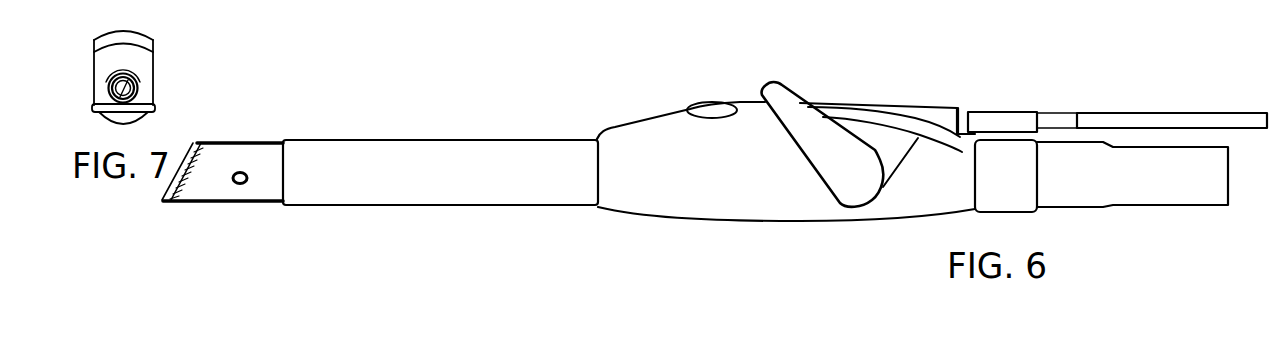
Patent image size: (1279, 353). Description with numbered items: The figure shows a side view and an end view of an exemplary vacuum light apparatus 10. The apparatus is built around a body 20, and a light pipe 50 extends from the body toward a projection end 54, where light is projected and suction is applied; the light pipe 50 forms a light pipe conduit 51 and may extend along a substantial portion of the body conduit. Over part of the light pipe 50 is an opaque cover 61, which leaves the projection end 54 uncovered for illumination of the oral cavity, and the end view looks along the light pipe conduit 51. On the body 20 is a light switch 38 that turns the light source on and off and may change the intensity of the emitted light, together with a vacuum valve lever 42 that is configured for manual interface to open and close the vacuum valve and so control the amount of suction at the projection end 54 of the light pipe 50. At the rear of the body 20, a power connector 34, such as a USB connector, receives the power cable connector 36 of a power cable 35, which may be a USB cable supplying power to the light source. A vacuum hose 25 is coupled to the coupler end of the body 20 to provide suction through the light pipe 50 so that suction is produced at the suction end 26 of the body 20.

In FIG. 6, the vacuum light apparatus 10 is at (776, 149).
In FIG. 6, the body 20 is at (878, 143).
In FIG. 6, the vacuum hose 25 is at (1075, 173).
In FIG. 6, the suction end 26 is at (601, 202).
In FIG. 6, the power connector 34 is at (972, 120).
In FIG. 6, the power cable 35 is at (1135, 132).
In FIG. 6, the power cable connector 36 is at (1000, 130).
In FIG. 6, the light switch 38 is at (700, 102).
In FIG. 6, the vacuum valve lever 42 is at (786, 108).
In FIG. 6, the light pipe 50 is at (370, 165).
In FIG. 7, the light pipe conduit 51 is at (140, 78).
In FIG. 6, the light pipe conduit 51 is at (403, 165).
In FIG. 6, the projection end 54 is at (163, 199).
In FIG. 6, the opaque cover 61 is at (523, 153).